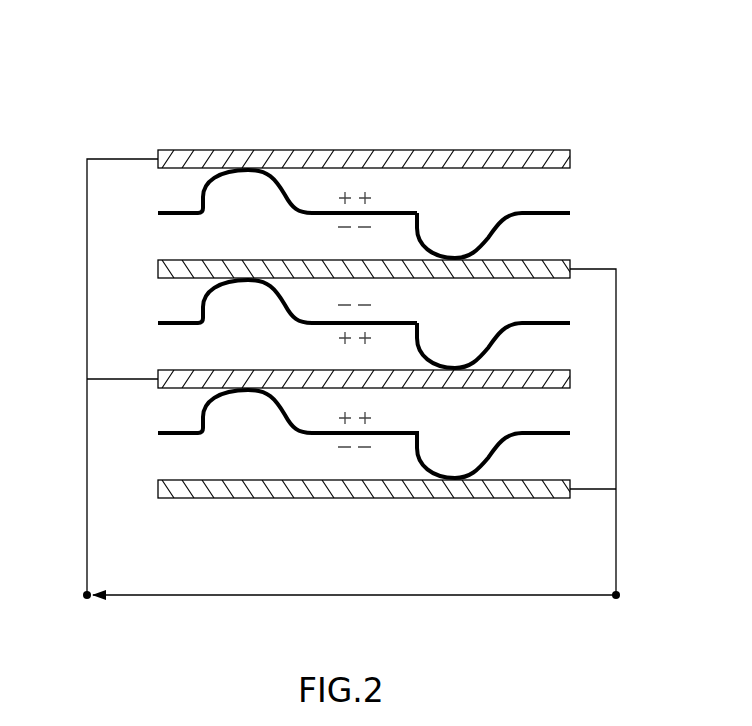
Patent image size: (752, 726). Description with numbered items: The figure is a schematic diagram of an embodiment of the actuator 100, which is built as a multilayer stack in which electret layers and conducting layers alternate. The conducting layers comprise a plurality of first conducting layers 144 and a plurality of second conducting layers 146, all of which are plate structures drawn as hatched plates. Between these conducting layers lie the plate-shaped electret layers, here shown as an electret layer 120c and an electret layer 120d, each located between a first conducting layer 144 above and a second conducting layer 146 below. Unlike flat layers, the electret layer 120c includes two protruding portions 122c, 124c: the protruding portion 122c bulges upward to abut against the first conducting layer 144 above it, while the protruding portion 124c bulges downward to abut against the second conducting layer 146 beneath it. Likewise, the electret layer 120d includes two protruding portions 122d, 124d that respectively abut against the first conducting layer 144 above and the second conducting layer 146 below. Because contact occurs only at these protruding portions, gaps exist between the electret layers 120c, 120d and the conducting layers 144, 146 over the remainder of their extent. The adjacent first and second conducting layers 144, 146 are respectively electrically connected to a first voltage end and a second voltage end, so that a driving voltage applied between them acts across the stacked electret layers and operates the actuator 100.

The actuator 100 is at (112, 84).
The electret layer 120c is at (405, 324).
The electret layer 120d is at (406, 324).
The protruding portion 122c is at (205, 186).
The protruding portion 122d is at (205, 293).
The protruding portion 124c is at (493, 240).
The protruding portion 124d is at (493, 350).
The first conducting layer 144 is at (572, 153).
The second conducting layer 146 is at (572, 262).